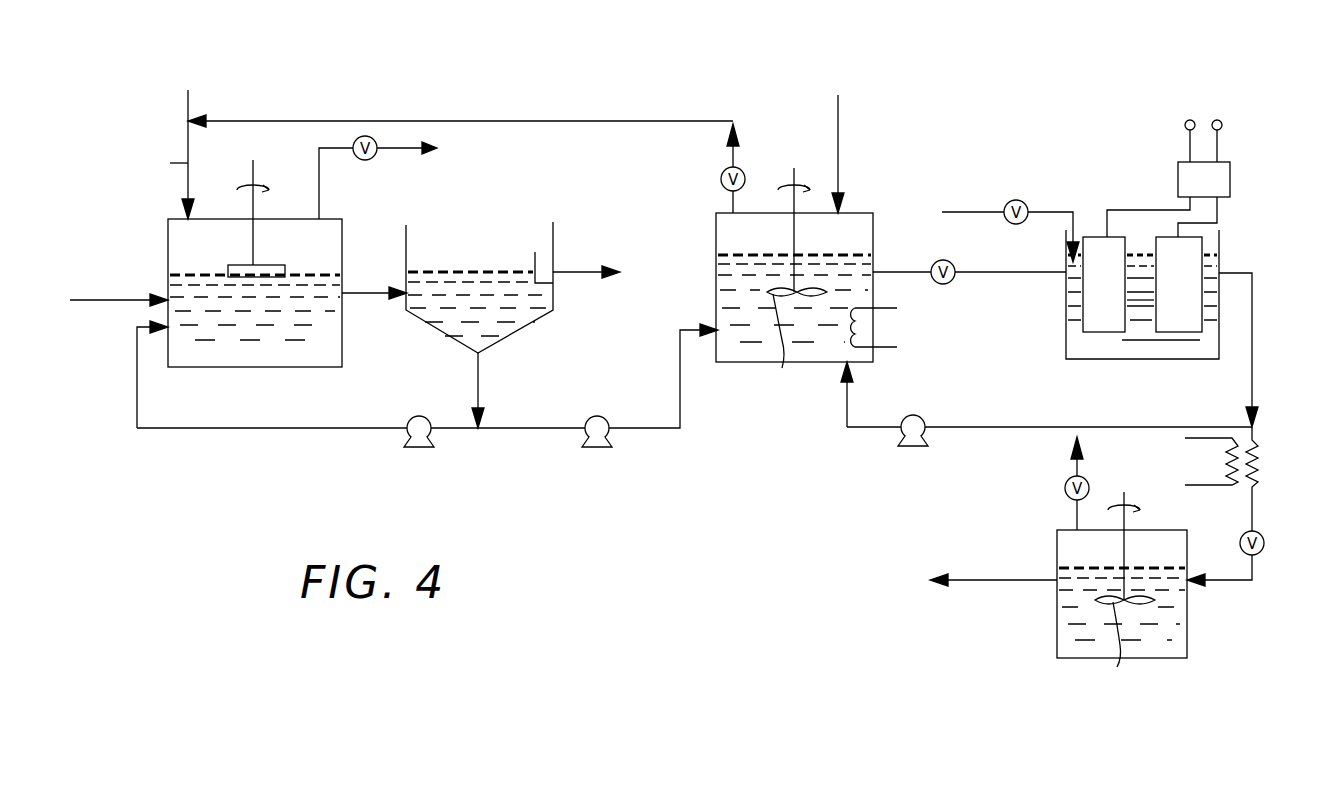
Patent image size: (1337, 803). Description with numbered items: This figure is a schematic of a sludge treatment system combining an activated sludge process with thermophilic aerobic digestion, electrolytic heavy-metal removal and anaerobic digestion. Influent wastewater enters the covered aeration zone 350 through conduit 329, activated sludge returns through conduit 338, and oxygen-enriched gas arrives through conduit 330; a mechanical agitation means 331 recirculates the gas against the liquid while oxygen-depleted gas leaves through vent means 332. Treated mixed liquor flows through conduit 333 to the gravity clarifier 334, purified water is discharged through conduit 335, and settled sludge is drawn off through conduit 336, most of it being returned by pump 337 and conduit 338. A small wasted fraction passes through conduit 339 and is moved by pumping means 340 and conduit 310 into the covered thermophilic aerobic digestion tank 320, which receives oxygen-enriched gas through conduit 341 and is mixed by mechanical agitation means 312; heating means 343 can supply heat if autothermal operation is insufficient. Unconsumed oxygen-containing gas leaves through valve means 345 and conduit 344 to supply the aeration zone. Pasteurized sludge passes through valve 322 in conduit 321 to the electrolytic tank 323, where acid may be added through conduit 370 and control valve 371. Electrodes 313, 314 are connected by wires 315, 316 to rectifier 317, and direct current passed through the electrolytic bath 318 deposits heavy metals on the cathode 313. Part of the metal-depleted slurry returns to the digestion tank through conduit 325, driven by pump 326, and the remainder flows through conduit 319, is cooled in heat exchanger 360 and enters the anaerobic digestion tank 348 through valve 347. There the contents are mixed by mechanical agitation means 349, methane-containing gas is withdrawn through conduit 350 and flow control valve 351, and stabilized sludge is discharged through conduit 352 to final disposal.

The conduit 310 is at (680, 400).
The mechanical agitation means 312 is at (783, 344).
The cathode 313 is at (1100, 322).
The electrode 314 is at (1183, 327).
The wire 315 is at (1122, 208).
The wire 316 is at (1220, 215).
The rectifier 317 is at (1178, 178).
The electrolytic bath 318 is at (1145, 308).
The conduit 319 is at (1254, 384).
The thermophilic aerobic digestion tank 320 is at (716, 288).
The conduit 321 is at (1005, 276).
The valve 322 is at (958, 248).
The electrolytic tank 323 is at (1062, 328).
The conduit 325 is at (970, 428).
The pump 326 is at (920, 412).
The conduit 329 is at (101, 303).
The conduit 330 is at (156, 162).
The mechanical agitation means 331 is at (242, 265).
The vent means 332 is at (322, 164).
The conduit 333 is at (369, 290).
The gravity clarifier 334 is at (553, 237).
The conduit 335 is at (580, 268).
The conduit 336 is at (478, 377).
The pump 337 is at (414, 408).
The conduit 338 is at (215, 428).
The conduit 339 is at (517, 430).
The pumping means 340 is at (607, 416).
The conduit 341 is at (843, 138).
The heating means 343 is at (884, 347).
The conduit 344 is at (684, 120).
The valve means 345 is at (738, 165).
The valve 347 is at (1266, 540).
The anaerobic digestion tank 348 is at (1187, 640).
The mechanical agitation means 349 is at (1121, 648).
The aeration zone 350 is at (342, 343).
The flow control valve 351 is at (1066, 480).
The conduit 352 is at (1014, 585).
The heat exchanger 360 is at (1196, 480).
The conduit 370 is at (966, 210).
The control valve 371 is at (1032, 210).